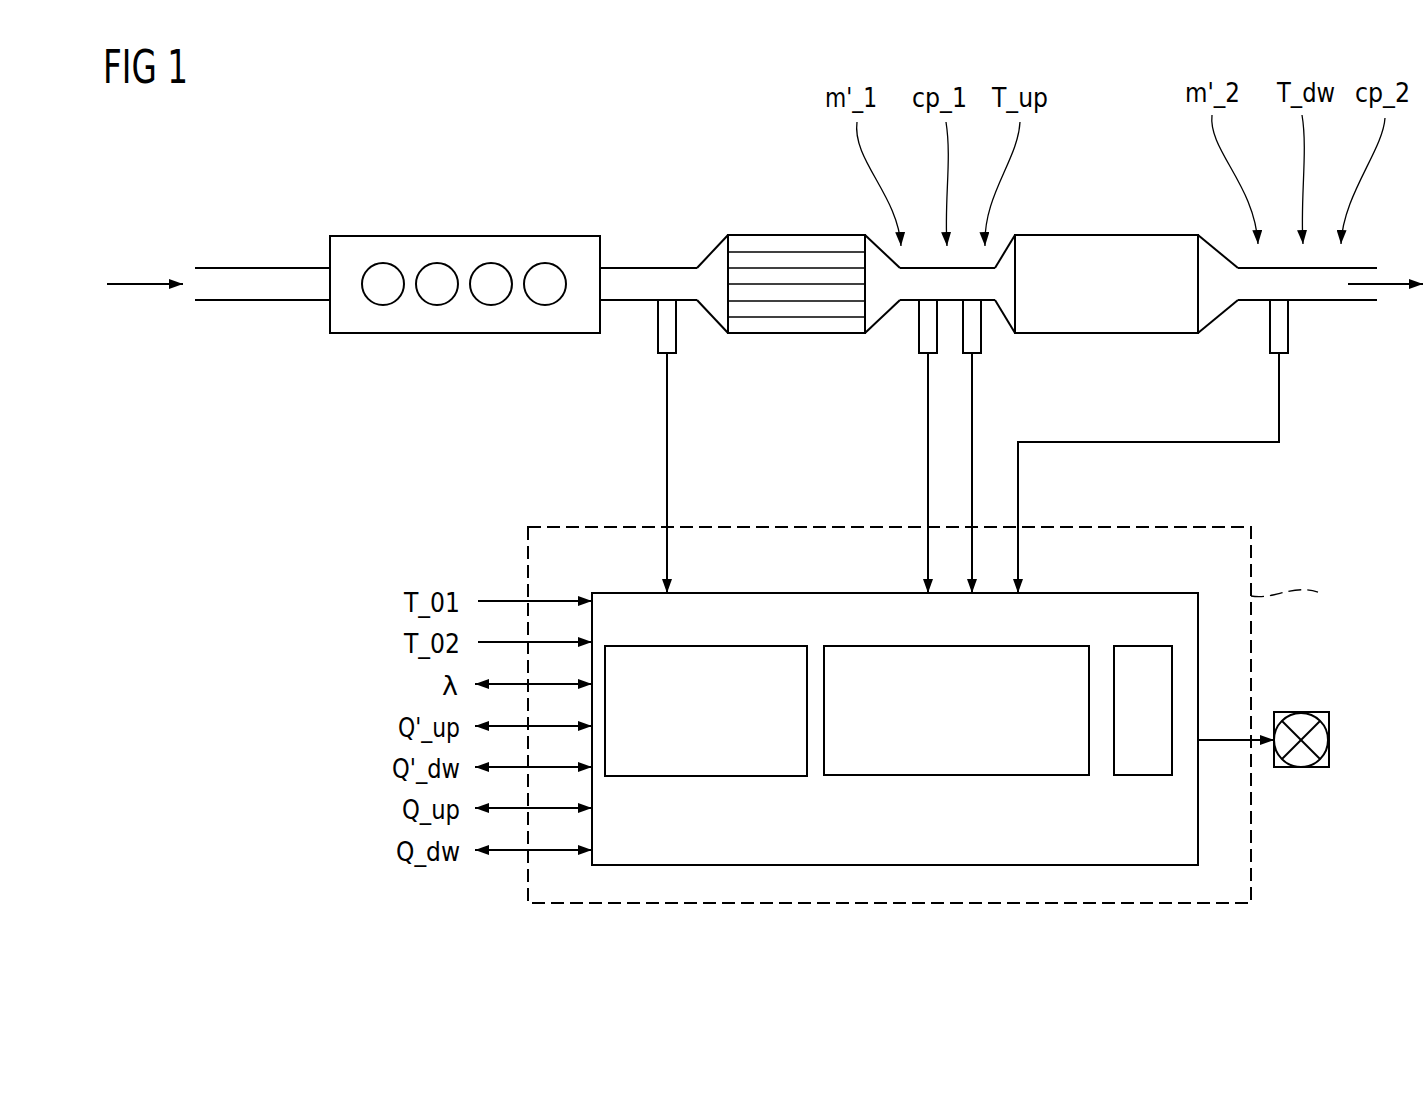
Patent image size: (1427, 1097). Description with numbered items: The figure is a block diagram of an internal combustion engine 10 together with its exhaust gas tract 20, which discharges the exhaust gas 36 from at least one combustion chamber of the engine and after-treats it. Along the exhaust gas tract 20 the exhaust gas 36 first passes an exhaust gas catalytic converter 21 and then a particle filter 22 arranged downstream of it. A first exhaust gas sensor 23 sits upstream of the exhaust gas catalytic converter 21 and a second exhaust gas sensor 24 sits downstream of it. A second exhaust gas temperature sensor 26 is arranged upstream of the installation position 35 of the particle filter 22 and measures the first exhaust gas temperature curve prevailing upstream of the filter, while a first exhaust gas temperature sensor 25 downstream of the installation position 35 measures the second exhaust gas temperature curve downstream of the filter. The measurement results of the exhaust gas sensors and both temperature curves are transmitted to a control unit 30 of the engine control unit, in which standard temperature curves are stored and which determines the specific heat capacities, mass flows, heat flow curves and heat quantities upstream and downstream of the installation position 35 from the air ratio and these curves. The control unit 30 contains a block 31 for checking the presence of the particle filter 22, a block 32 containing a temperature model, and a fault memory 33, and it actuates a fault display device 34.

The internal combustion engine 10 is at (463, 236).
The exhaust gas tract 20 is at (647, 268).
The exhaust gas catalytic converter 21 is at (797, 235).
The particle filter 22 is at (1108, 235).
The first exhaust gas sensor 23 is at (677, 335).
The second exhaust gas sensor 24 is at (918, 335).
The first exhaust gas temperature sensor 25 is at (1288, 337).
The second exhaust gas temperature sensor 26 is at (982, 335).
The control unit 30 is at (1198, 670).
The block for checking the presence of the particle filter 31 is at (685, 776).
The block containing a temperature model 32 is at (948, 775).
The fault memory 33 is at (1142, 775).
The fault display device 34 is at (1329, 740).
The installation position of the particle filter 35 is at (1148, 208).
The exhaust gas 36 is at (1395, 272).